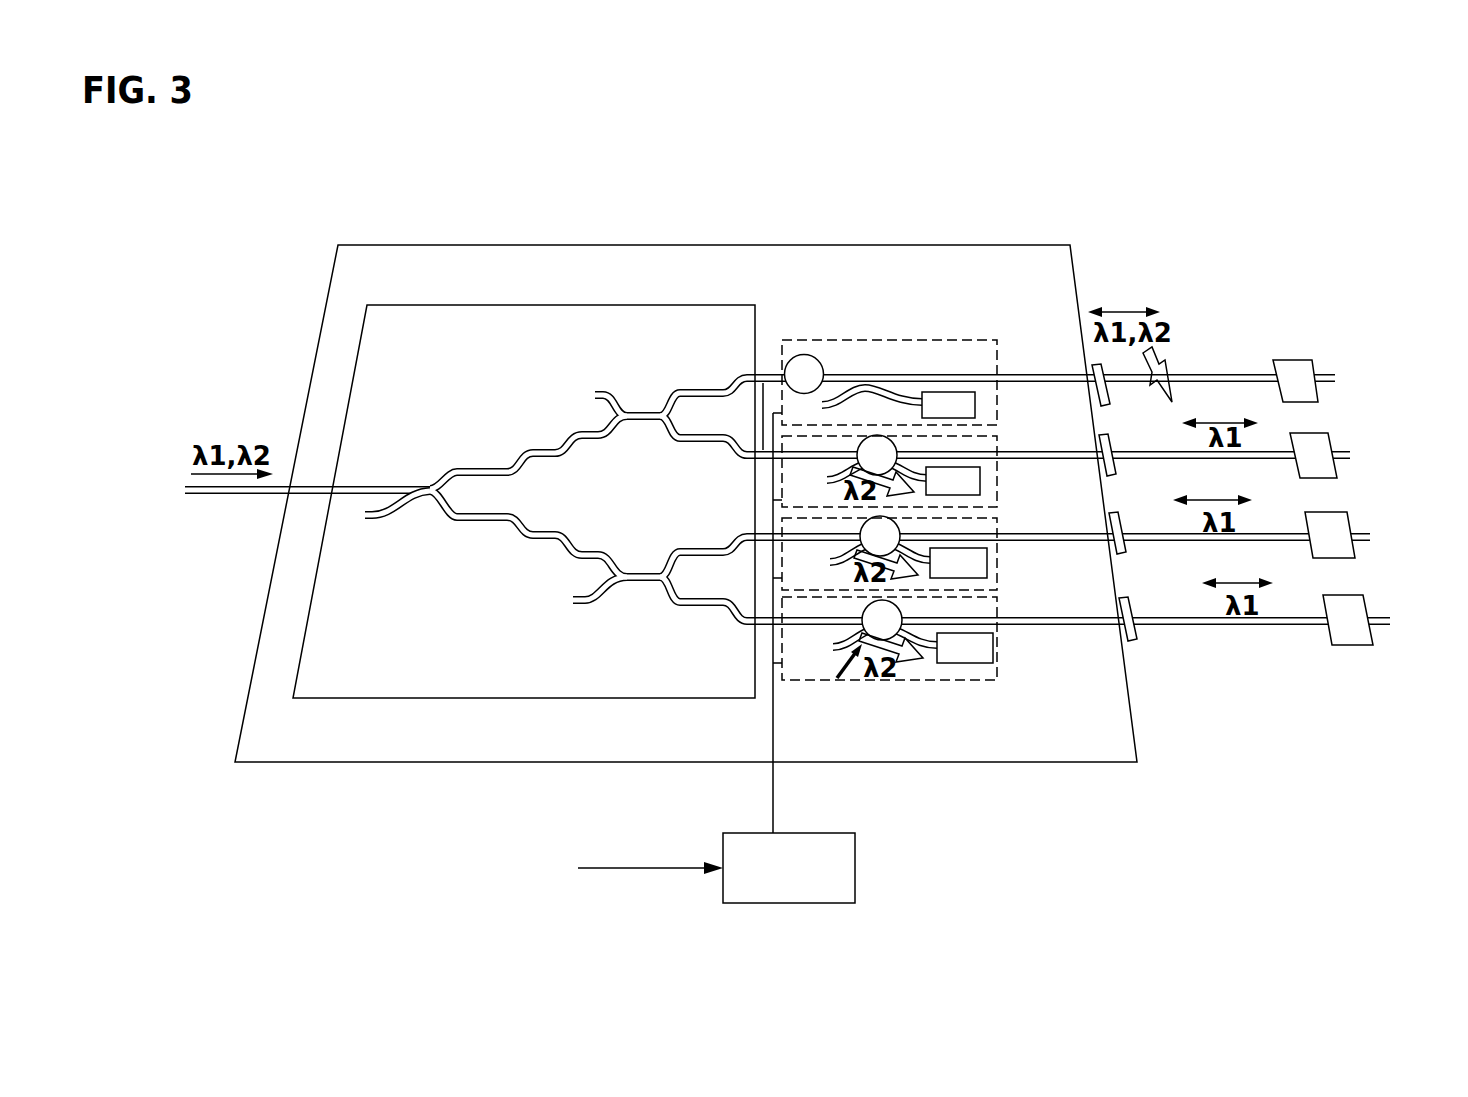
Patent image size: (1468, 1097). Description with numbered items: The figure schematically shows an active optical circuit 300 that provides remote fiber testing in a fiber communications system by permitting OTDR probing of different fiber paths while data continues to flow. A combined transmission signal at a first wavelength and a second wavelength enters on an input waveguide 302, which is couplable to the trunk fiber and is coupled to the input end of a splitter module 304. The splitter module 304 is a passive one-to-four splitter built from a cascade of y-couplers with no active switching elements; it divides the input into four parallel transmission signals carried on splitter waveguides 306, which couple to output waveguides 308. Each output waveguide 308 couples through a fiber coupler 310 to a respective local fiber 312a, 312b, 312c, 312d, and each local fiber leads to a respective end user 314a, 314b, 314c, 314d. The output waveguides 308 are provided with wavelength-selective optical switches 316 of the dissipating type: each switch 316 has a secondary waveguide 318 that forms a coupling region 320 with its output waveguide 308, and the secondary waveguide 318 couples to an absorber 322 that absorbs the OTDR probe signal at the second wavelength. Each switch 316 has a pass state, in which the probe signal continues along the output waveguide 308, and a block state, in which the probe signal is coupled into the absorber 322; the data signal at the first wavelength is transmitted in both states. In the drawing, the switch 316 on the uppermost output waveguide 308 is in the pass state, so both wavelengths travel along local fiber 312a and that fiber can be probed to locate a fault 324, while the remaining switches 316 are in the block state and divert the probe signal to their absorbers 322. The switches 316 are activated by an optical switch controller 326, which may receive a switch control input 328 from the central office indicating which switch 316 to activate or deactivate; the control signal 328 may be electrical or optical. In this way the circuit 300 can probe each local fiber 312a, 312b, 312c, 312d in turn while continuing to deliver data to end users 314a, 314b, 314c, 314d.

The optical circuit 300 is at (703, 170).
The input waveguide 302 is at (230, 495).
The splitter module 304 is at (423, 303).
The splitter waveguides 306 is at (738, 390).
The output waveguides 308 is at (1030, 373).
The fiber coupler 310 is at (1097, 403).
The local fiber 312a is at (1265, 375).
The local fiber 312b is at (1282, 448).
The local fiber 312c is at (1285, 530).
The local fiber 312d is at (1302, 613).
The end user 314a is at (1313, 363).
The end user 314b is at (1328, 440).
The end user 314c is at (1348, 520).
The end user 314d is at (1365, 603).
The wavelength-selective optical switch 316 is at (997, 410).
The secondary waveguide 318 is at (838, 393).
The coupling region 320 is at (873, 383).
The absorber 322 is at (973, 392).
The fault 324 is at (1162, 357).
The optical switch controller 326 is at (817, 903).
The switch control input 328 is at (653, 868).